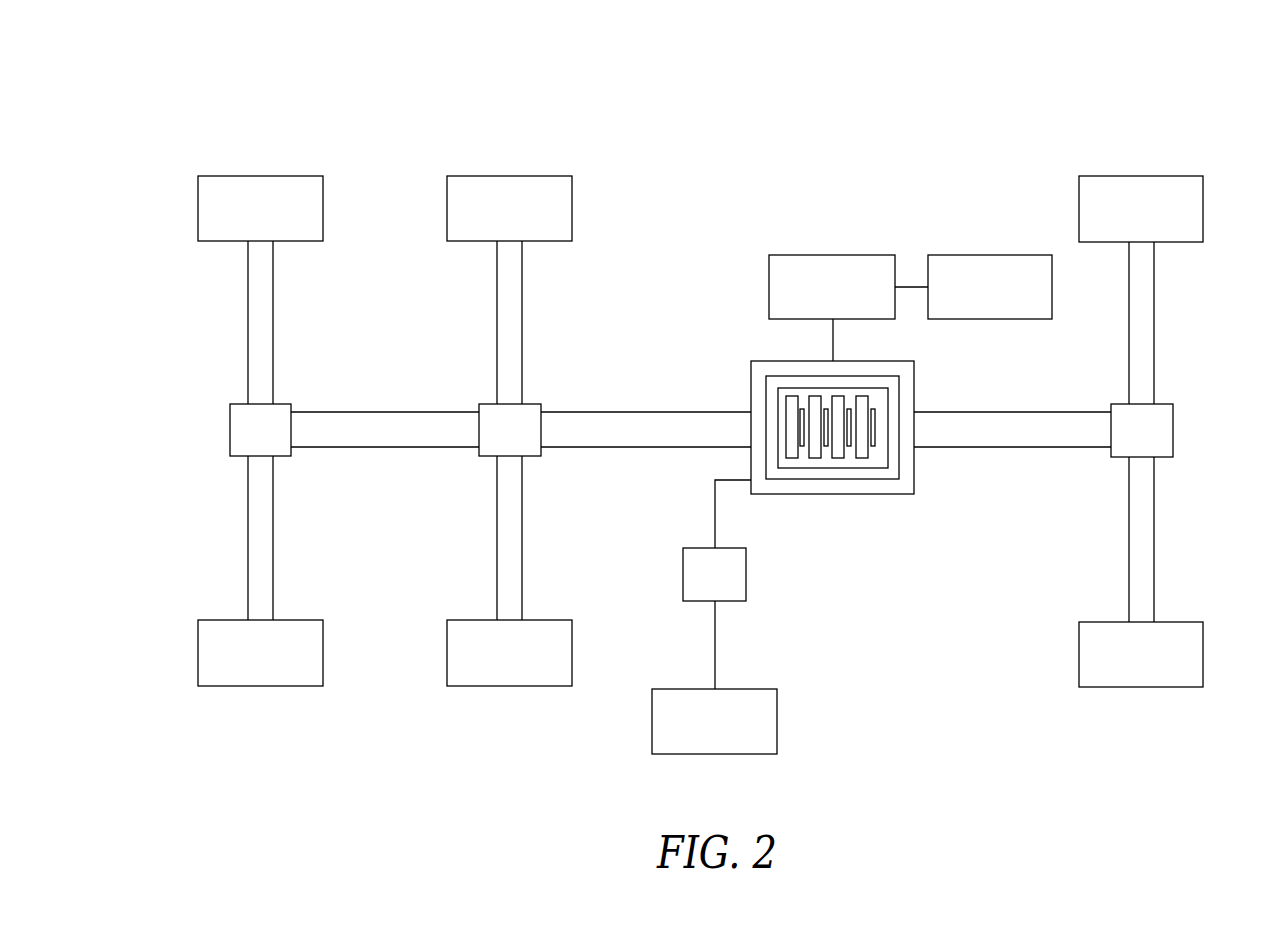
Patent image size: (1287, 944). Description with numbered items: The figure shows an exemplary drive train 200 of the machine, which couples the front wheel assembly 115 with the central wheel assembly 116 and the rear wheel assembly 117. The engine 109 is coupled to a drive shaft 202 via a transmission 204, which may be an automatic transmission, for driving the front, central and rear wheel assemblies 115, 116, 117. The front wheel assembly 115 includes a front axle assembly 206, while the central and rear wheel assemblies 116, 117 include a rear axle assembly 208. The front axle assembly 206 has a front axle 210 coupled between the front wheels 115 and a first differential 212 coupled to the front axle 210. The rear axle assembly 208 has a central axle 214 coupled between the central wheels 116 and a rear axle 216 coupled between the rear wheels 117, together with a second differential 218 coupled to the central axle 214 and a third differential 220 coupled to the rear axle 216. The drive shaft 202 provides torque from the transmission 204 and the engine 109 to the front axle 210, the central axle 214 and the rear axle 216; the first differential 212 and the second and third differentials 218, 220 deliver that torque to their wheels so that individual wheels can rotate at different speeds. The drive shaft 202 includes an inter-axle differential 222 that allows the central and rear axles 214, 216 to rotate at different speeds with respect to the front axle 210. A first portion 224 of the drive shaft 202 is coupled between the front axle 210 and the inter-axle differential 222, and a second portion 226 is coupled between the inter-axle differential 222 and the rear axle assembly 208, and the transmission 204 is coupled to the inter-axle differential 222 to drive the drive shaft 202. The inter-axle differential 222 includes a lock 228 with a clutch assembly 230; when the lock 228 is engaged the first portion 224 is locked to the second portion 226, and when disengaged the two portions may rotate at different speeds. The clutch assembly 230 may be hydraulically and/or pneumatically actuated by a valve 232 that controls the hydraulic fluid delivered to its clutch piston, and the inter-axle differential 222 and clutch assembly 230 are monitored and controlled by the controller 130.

The drive train 200 is at (215, 75).
The engine 109 is at (1007, 301).
The front wheel assembly 115 is at (1159, 225).
The central wheel assembly 116 is at (527, 225).
The rear wheel assembly 117 is at (278, 225).
The controller 130 is at (732, 738).
The drive shaft 202 is at (417, 448).
The transmission 204 is at (850, 301).
The front axle assembly 206 is at (1207, 354).
The rear axle assembly 208 is at (207, 327).
The front axle 210 is at (1154, 538).
The first differential 212 is at (1159, 441).
The central axle 214 is at (522, 538).
The rear axle 216 is at (273, 538).
The second differential 218 is at (527, 441).
The third differential 220 is at (278, 441).
The inter-axle differential 222 is at (897, 494).
The first portion 224 is at (1010, 460).
The second portion 226 is at (625, 473).
The lock 228 is at (812, 480).
The clutch assembly 230 is at (862, 408).
The valve 232 is at (732, 586).